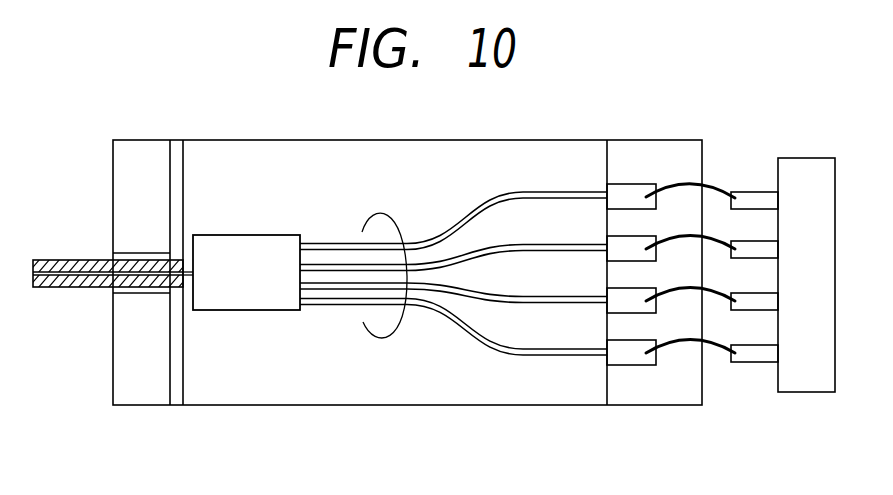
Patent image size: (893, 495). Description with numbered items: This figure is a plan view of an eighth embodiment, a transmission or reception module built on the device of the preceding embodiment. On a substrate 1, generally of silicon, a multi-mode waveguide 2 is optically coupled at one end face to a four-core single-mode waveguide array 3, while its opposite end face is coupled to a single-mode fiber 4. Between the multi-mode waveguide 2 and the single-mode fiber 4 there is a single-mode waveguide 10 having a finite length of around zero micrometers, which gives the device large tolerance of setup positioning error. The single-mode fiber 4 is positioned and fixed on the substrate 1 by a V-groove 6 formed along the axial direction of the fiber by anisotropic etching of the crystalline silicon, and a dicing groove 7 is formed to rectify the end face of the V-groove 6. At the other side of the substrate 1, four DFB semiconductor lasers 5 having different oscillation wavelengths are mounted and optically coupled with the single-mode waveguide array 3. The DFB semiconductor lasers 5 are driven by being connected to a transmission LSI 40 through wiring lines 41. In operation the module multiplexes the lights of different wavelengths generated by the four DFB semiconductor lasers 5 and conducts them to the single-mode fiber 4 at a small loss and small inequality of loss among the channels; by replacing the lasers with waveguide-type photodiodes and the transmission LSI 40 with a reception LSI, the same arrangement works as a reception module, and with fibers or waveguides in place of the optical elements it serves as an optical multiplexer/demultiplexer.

The substrate 1 is at (372, 402).
The multi-mode waveguide 2 is at (237, 245).
The single-mode waveguide array 3 is at (363, 230).
The single-mode fiber 4 is at (62, 288).
The DFB semiconductor lasers 5 is at (628, 184).
The V-groove 6 is at (133, 257).
The dicing groove 7 is at (173, 331).
The single-mode waveguide 10 is at (187, 277).
The transmission LSI 40 is at (802, 160).
The wiring lines 41 is at (727, 184).